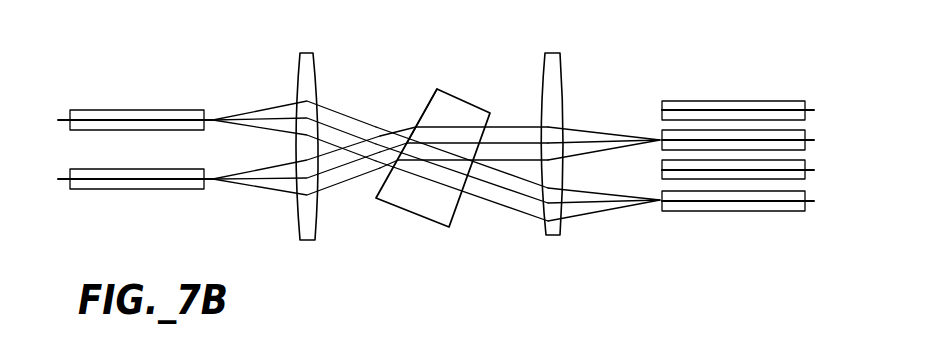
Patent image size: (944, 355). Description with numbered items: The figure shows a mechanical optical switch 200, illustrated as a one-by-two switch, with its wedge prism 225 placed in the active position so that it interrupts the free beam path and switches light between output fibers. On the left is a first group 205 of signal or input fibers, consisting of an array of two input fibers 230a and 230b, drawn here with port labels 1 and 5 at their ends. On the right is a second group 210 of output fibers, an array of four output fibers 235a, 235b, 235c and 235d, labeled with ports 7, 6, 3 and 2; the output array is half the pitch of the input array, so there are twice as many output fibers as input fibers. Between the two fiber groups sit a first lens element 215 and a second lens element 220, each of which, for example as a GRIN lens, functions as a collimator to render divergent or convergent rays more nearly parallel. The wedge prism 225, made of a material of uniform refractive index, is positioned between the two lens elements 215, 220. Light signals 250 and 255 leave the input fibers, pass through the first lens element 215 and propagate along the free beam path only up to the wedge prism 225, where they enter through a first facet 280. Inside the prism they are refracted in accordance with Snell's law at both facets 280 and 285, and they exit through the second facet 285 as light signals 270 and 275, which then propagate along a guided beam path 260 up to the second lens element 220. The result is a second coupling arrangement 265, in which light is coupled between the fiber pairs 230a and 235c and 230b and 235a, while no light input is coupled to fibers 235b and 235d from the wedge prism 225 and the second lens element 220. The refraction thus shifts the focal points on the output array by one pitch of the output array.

The mechanical optical switch 200 is at (364, 252).
The first group of input fibers 205 is at (140, 96).
The second group of output fibers 210 is at (706, 74).
The first lens element 215 is at (306, 53).
The second lens element 220 is at (556, 53).
The wedge prism 225 is at (455, 90).
The input fiber 230a is at (120, 191).
The input fiber 230b is at (114, 109).
The output fiber 235a is at (790, 212).
The output fiber 235b is at (741, 180).
The output fiber 235c is at (753, 130).
The output fiber 235d is at (724, 100).
The light signal 250 is at (343, 174).
The light signal 255 is at (333, 117).
The guided beam path 260 is at (365, 188).
The second coupling arrangement 265 is at (518, 207).
The light signal 270 is at (514, 133).
The light signal 275 is at (495, 180).
The first facet 280 is at (425, 100).
The second facet 285 is at (528, 143).
The input port 1 is at (127, 178).
The input port 5 is at (126, 118).
The output port 2 is at (819, 110).
The output port 3 is at (819, 140).
The output port 6 is at (819, 170).
The output port 7 is at (819, 200).